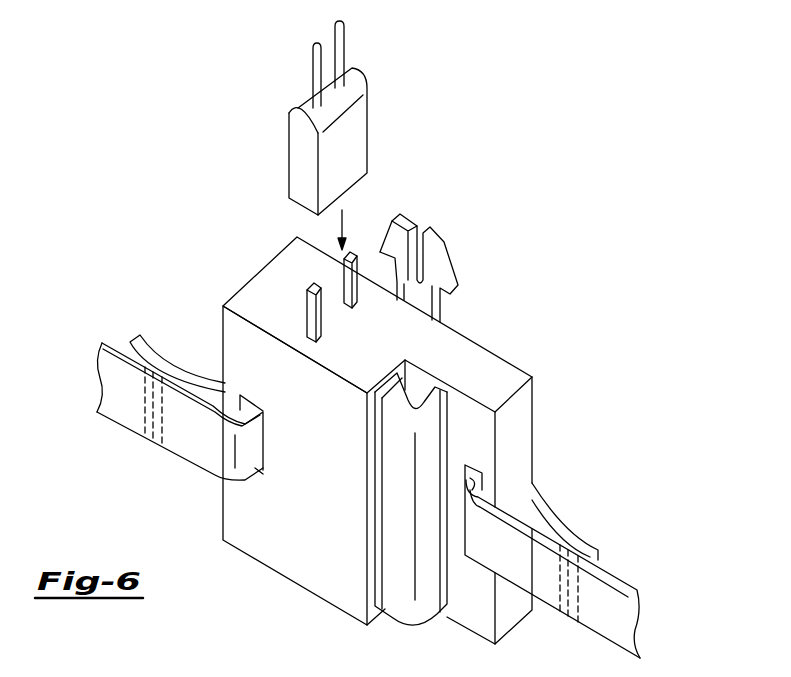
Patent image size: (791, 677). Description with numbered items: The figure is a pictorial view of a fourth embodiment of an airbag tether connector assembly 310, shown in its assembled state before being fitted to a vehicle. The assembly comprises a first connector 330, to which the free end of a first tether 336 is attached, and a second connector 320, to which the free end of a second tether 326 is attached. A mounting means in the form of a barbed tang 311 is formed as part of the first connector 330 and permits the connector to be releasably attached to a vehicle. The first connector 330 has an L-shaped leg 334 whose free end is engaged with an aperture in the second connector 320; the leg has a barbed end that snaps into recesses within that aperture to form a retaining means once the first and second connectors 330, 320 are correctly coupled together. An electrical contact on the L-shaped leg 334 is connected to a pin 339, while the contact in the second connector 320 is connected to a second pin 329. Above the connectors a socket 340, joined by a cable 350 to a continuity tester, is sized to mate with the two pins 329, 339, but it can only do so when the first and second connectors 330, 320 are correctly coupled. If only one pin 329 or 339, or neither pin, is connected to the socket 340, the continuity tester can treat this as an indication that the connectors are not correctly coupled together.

The airbag tether connector assembly 310 is at (121, 149).
The barbed tang 311 is at (453, 263).
The second connector 320 is at (286, 552).
The second tether 326 is at (122, 408).
The second pin 329 is at (307, 312).
The first connector 330 is at (476, 616).
The L-shaped leg 334 is at (403, 602).
The first tether 336 is at (615, 632).
The pin 339 is at (343, 278).
The socket 340 is at (290, 118).
The cable 350 is at (315, 58).